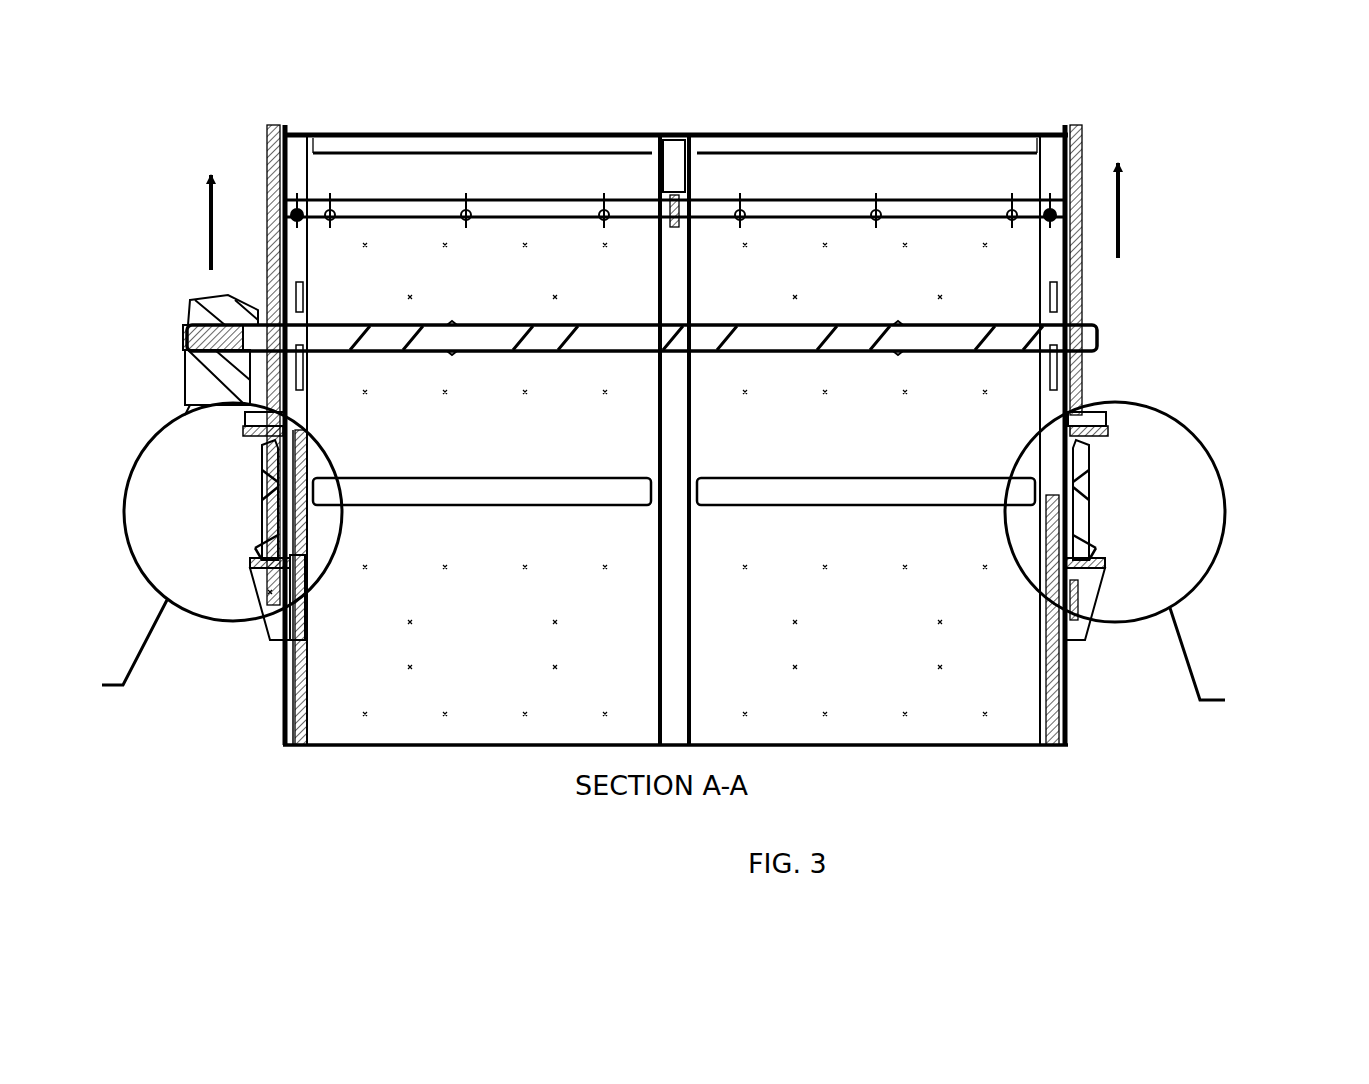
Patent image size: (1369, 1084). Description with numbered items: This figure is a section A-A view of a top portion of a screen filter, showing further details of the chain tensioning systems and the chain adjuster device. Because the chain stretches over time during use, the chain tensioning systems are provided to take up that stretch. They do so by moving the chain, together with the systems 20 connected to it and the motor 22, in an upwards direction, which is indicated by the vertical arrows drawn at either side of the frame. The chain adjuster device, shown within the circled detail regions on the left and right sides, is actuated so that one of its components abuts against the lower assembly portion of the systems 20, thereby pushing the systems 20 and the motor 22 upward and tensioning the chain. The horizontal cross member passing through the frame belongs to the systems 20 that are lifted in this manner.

The systems 20 is at (158, 333).
The motor 22 is at (210, 377).